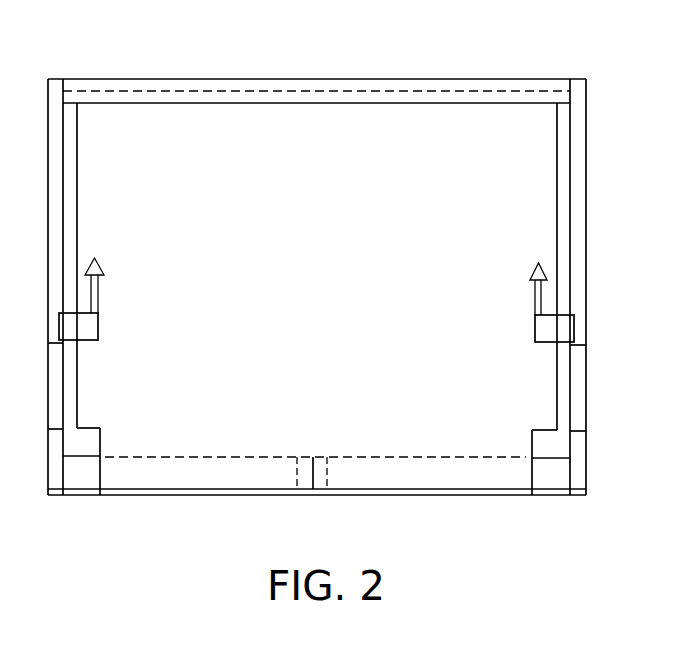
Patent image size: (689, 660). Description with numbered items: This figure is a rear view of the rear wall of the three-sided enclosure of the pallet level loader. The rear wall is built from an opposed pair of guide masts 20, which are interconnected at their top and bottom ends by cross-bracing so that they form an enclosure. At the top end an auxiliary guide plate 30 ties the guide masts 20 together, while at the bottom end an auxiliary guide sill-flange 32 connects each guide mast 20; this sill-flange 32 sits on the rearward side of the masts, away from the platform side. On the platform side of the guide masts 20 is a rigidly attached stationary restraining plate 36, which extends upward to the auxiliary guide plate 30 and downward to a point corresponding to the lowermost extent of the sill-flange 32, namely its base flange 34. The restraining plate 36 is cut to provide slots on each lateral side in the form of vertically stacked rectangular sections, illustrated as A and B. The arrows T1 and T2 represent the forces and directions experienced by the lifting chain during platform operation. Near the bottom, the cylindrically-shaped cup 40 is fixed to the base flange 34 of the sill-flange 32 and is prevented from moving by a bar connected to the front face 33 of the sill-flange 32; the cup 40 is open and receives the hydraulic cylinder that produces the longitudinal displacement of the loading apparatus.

The guide mast 20 is at (53, 193).
The auxiliary guide plate 30 is at (495, 80).
The auxiliary guide sill-flange 32 is at (417, 457).
The front face 33 is at (90, 475).
The base flange 34 is at (413, 493).
The stationary restraining plate 36 is at (326, 223).
The cylindrically-shaped cup 40 is at (328, 475).
The slot A is at (86, 149).
The slot B is at (97, 437).
The chain force arrow T1 is at (94, 269).
The chain force arrow T2 is at (537, 273).